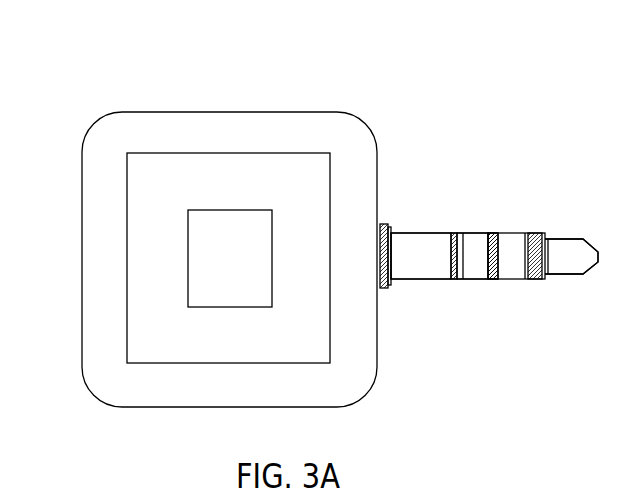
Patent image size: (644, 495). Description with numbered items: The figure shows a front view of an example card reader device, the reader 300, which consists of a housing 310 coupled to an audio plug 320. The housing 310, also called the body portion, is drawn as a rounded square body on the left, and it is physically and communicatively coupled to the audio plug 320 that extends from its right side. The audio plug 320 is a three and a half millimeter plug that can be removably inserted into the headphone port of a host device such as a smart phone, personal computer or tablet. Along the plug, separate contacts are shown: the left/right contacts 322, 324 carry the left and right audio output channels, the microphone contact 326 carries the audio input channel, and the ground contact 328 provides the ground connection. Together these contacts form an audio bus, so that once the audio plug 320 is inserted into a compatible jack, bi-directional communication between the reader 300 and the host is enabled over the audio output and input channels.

The reader 300 is at (86, 81).
The housing 310 is at (112, 404).
The audio plug 320 is at (612, 175).
The left/right contact 322 is at (578, 258).
The left/right contact 324 is at (513, 247).
The microphone contact 326 is at (421, 263).
The ground contact 328 is at (477, 272).